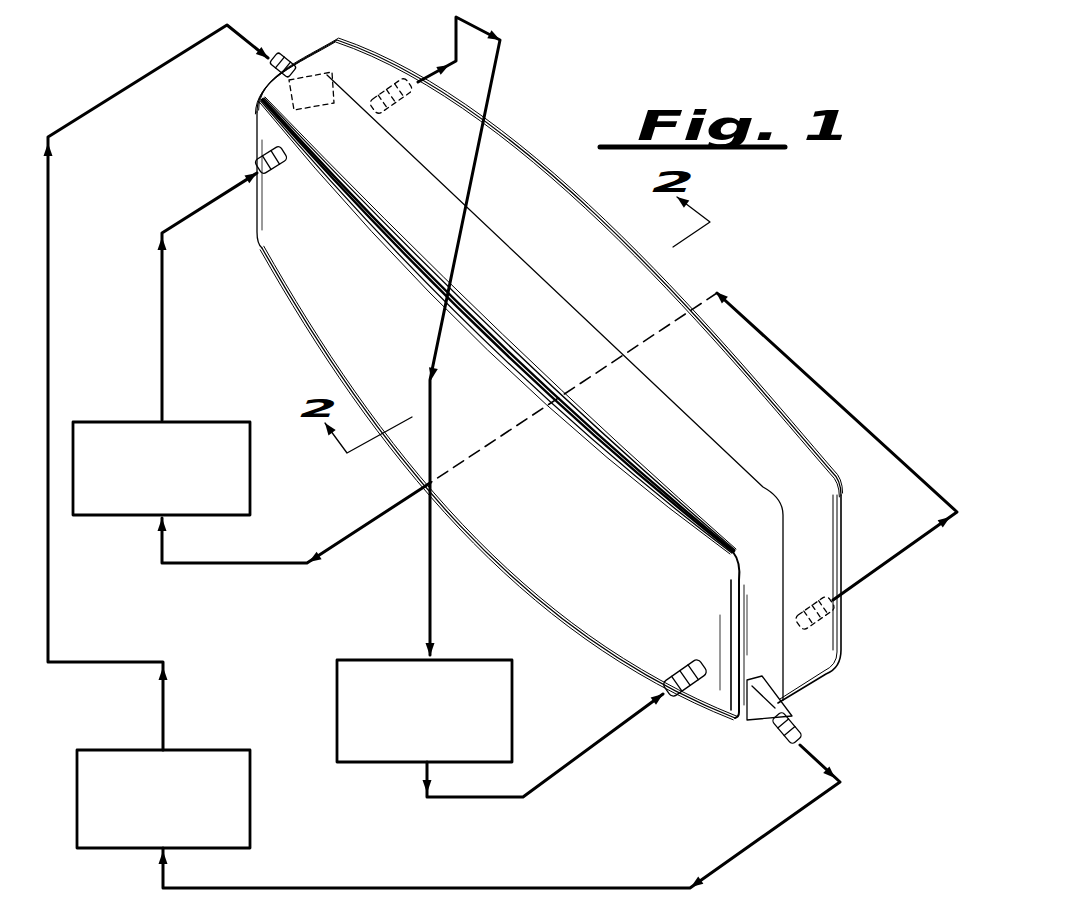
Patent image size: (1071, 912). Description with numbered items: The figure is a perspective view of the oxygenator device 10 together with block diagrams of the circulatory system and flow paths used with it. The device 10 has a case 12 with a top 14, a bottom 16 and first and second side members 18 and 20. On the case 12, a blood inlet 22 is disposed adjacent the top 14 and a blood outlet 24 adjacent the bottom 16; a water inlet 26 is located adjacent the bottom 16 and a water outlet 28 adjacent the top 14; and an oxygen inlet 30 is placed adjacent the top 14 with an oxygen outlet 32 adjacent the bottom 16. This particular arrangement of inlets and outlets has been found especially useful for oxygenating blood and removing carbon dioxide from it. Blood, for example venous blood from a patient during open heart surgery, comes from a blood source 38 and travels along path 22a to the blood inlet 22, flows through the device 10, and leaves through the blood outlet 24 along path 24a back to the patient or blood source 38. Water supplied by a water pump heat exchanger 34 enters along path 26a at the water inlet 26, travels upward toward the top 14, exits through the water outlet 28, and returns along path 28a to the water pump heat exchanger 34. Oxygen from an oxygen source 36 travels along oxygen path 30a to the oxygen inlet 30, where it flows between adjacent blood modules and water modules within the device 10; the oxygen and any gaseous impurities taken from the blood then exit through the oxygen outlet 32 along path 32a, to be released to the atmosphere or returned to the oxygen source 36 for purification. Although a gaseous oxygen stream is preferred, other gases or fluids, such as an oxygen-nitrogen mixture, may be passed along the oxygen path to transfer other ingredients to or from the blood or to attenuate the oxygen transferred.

The oxygenator device 10 is at (722, 256).
The case 12 is at (660, 288).
The top 14 is at (507, 332).
The bottom 16 is at (803, 689).
The first side member 18 is at (515, 553).
The second side member 20 is at (537, 157).
The blood inlet 22 is at (272, 68).
The blood inlet path 22a is at (216, 34).
The blood outlet 24 is at (797, 730).
The blood outlet path 24a is at (833, 770).
The water inlet 26 is at (683, 704).
The water inlet path 26a is at (620, 728).
The water outlet 28 is at (410, 97).
The water outlet path 28a is at (490, 88).
The oxygen inlet 30 is at (255, 160).
The oxygen path 30a is at (161, 322).
The oxygen outlet 32 is at (832, 620).
The oxygen outlet path 32a is at (857, 417).
The water pump heat exchanger 34 is at (512, 690).
The oxygen source 36 is at (250, 483).
The blood source 38 is at (250, 795).